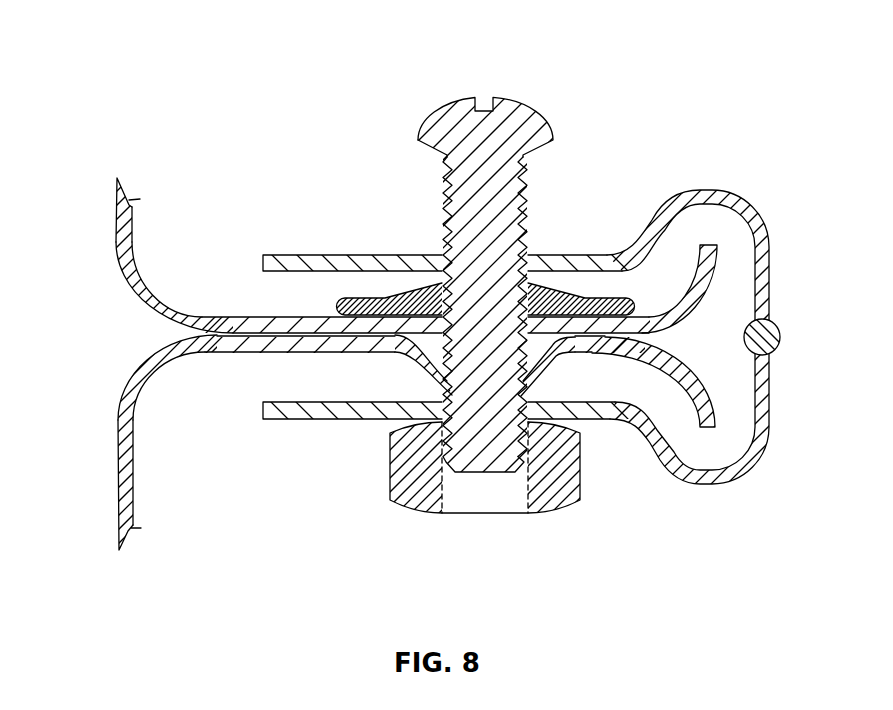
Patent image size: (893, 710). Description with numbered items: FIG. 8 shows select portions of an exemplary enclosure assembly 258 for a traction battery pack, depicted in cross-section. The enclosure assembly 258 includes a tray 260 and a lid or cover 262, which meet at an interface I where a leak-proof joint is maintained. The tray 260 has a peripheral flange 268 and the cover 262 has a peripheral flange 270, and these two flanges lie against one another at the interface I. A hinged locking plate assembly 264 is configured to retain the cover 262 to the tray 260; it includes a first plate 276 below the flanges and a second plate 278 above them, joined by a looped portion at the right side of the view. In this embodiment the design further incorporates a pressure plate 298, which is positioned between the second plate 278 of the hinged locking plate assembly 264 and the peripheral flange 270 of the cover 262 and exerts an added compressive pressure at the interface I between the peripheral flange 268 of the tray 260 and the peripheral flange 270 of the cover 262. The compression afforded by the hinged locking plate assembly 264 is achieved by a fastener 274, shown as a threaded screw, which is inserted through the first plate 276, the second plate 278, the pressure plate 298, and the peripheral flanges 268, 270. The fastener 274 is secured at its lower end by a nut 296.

The enclosure assembly 258 is at (716, 68).
The tray 260 is at (116, 457).
The cover 262 is at (117, 251).
The hinged locking plate assembly 264 is at (722, 187).
The peripheral flange 268 is at (233, 347).
The peripheral flange 270 is at (237, 325).
The fastener 274 is at (460, 100).
The first plate 276 is at (330, 412).
The second plate 278 is at (333, 260).
The nut 296 is at (553, 495).
The pressure plate 298 is at (576, 300).
The interface I is at (197, 336).